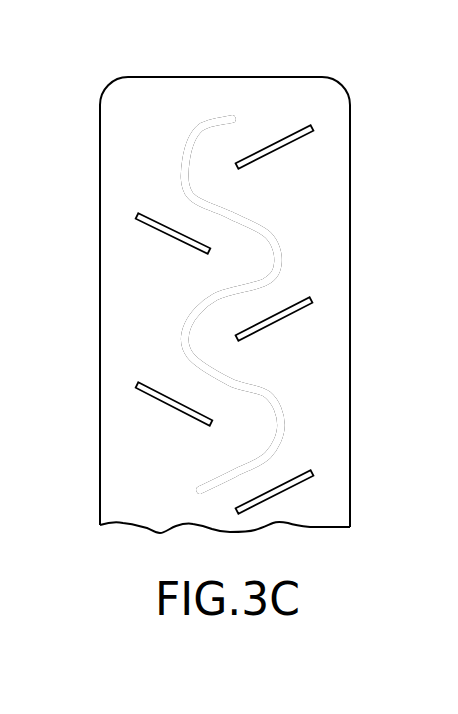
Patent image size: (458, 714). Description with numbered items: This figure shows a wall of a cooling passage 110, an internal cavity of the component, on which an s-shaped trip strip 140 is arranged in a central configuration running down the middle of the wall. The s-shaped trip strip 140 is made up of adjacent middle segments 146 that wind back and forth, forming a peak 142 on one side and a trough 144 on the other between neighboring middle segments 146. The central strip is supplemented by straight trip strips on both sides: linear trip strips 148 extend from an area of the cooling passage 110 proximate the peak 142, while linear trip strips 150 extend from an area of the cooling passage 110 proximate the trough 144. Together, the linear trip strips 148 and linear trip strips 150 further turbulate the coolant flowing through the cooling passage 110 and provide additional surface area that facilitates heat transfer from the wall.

The cooling passage 110 is at (332, 190).
The s-shaped trip strip 140 is at (199, 124).
The peak 142 is at (180, 164).
The trough 144 is at (283, 247).
The middle segments 146 is at (227, 200).
The linear trip strips 148 is at (273, 137).
The linear trip strips 150 is at (165, 233).